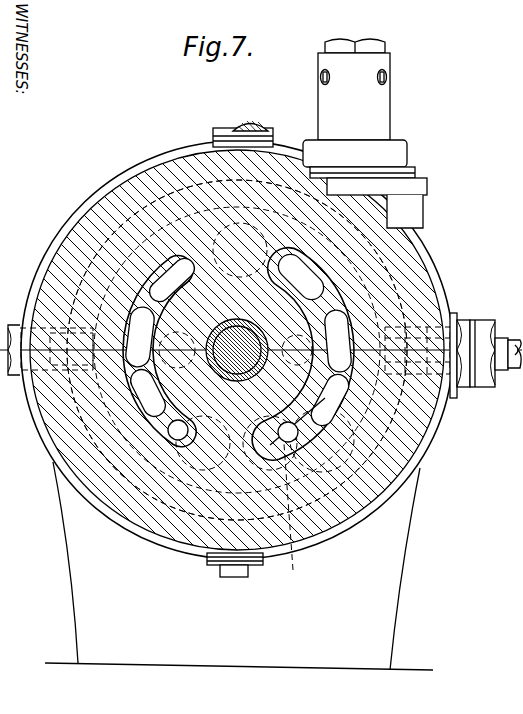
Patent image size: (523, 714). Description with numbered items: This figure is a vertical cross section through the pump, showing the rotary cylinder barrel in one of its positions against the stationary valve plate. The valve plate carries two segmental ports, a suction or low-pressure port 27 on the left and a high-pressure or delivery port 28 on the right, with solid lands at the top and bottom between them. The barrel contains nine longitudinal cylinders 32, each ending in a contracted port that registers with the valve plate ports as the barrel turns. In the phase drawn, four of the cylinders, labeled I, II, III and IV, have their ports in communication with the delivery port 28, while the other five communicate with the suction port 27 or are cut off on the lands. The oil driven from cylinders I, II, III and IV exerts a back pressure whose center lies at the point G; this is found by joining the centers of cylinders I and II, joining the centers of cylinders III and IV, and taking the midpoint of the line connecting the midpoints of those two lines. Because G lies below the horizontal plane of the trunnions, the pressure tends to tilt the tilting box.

The segmental port 27 is at (100, 280).
The segmental port 28 is at (452, 388).
The longitudinal cylinders 32 is at (47, 431).
The cylinder I is at (318, 295).
The cylinder II is at (337, 337).
The cylinder III is at (343, 373).
The cylinder IV is at (423, 480).
The center of pressure G is at (311, 408).